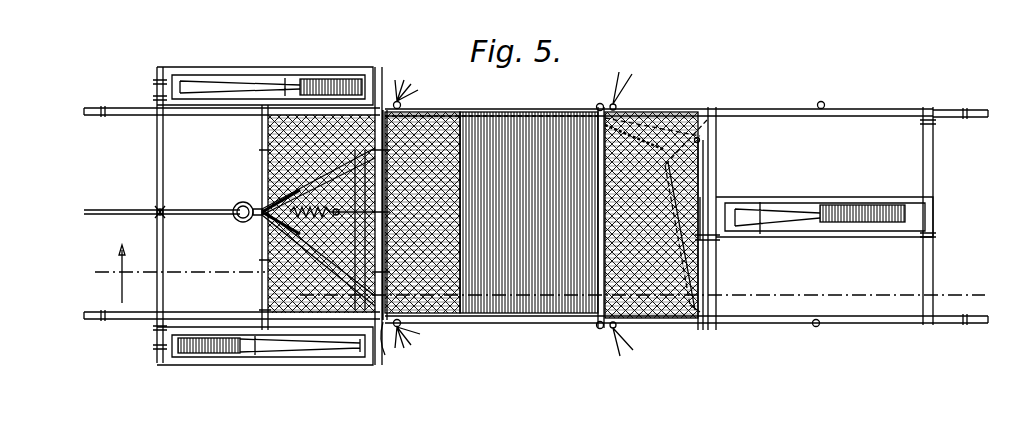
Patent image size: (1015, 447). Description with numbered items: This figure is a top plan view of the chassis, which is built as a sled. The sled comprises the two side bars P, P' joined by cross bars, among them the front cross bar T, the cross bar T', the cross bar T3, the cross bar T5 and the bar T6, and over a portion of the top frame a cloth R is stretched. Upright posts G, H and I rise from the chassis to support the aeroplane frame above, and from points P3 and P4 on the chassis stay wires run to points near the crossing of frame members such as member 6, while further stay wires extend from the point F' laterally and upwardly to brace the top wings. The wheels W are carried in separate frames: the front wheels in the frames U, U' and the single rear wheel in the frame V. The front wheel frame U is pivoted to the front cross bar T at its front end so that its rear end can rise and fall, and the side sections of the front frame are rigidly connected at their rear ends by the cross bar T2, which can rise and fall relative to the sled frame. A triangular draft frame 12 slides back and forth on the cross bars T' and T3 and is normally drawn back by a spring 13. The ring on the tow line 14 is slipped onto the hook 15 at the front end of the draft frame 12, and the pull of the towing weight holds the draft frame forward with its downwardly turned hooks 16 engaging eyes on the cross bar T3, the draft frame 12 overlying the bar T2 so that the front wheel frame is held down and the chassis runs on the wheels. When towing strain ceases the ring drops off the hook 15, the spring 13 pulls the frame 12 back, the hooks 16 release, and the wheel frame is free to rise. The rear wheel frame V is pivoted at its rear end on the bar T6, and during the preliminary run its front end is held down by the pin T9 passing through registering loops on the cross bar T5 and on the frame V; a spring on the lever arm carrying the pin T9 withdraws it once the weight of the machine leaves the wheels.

The side bar P is at (232, 126).
The side bar P' is at (232, 329).
The front cross bar T is at (143, 215).
The cross bar T' is at (248, 217).
The cross bar T2 is at (383, 80).
The cross bar T3 is at (418, 220).
The cross bar T5 is at (716, 271).
The bar T6 is at (934, 271).
The pin T9 is at (714, 205).
The front wheel frame U is at (265, 72).
The front wheel frame U' is at (265, 361).
The wheel W is at (320, 81).
The rear wheel frame V is at (760, 200).
The tow line 14 is at (128, 216).
The hook 15 is at (247, 225).
The spring 13 is at (316, 188).
The triangular draft frame 12 is at (403, 143).
The downwardly turned hook 16 is at (408, 295).
The member 6 is at (538, 276).
The point on post F F' is at (174, 195).
The upright post G is at (385, 335).
The point on chassis P3 is at (412, 331).
The point on chassis P4 is at (598, 219).
The upright post H is at (597, 107).
The cloth R is at (684, 311).
The upright post I is at (818, 103).